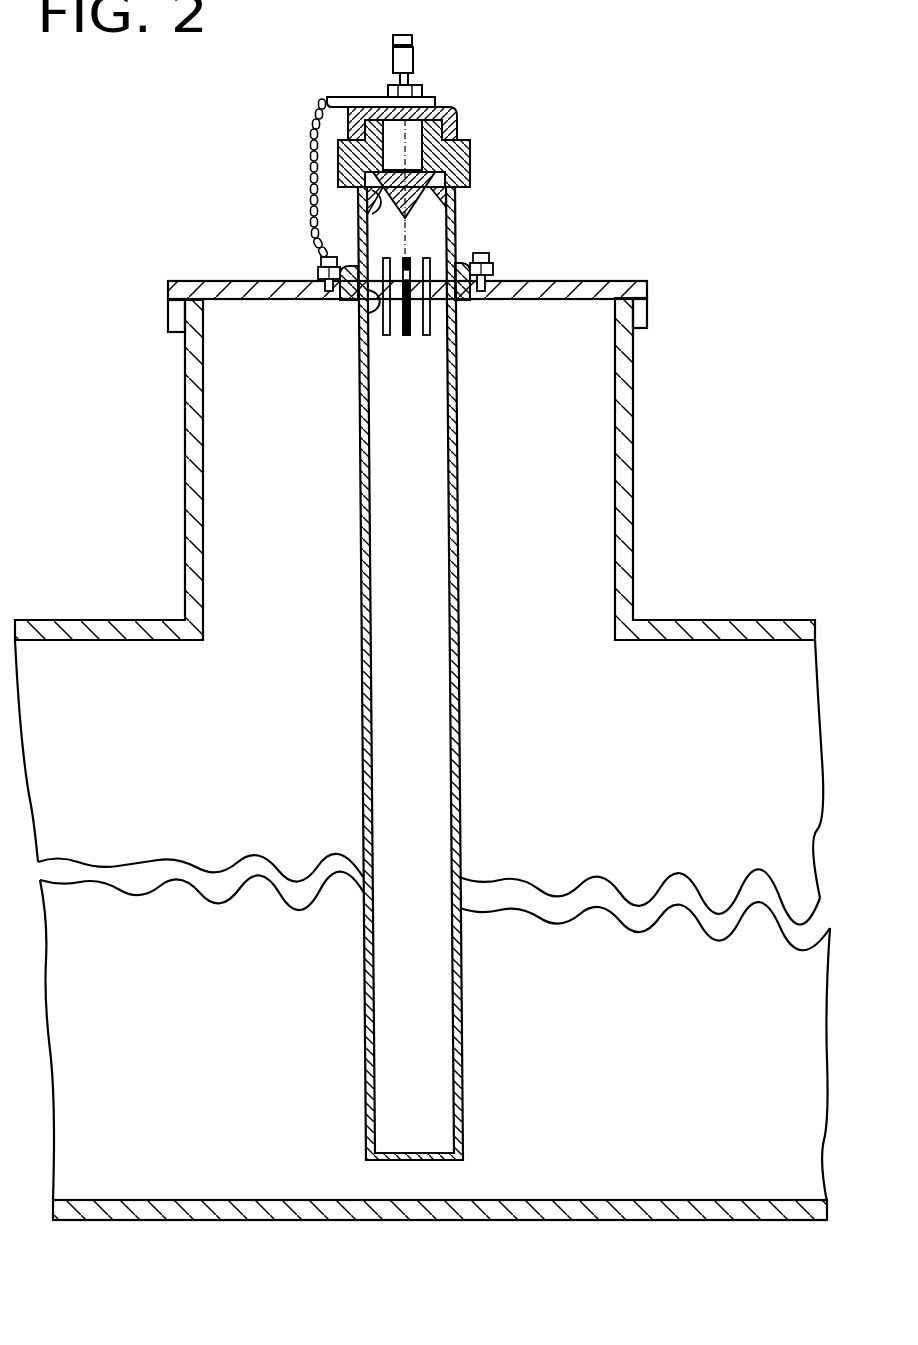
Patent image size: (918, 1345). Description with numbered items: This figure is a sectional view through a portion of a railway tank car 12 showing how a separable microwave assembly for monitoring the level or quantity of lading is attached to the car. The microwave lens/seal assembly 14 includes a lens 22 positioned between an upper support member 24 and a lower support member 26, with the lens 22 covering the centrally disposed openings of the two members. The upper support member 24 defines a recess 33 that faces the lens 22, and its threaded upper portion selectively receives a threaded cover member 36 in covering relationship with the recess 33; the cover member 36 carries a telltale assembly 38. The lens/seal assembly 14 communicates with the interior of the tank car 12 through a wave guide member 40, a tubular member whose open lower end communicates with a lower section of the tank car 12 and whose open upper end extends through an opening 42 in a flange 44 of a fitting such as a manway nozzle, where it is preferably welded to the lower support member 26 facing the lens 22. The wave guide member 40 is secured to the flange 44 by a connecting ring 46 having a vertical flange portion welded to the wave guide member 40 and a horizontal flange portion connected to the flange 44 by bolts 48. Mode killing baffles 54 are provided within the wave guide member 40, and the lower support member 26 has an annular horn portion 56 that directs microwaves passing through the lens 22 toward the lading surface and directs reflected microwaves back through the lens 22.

The railway tank car 12 is at (788, 695).
The microwave lens/seal assembly 14 is at (401, 119).
The lens 22 is at (452, 214).
The upper support member 24 is at (338, 153).
The lower support member 26 is at (316, 181).
The recess 33 is at (412, 133).
The cover member 36 is at (443, 107).
The telltale assembly 38 is at (403, 60).
The wave guide member 40 is at (459, 638).
The opening 42 is at (367, 296).
The flange 44 is at (588, 289).
The connecting ring 46 is at (466, 272).
The bolts 48 is at (325, 258).
The mode killing baffles 54 is at (431, 312).
The horn portion 56 is at (370, 206).